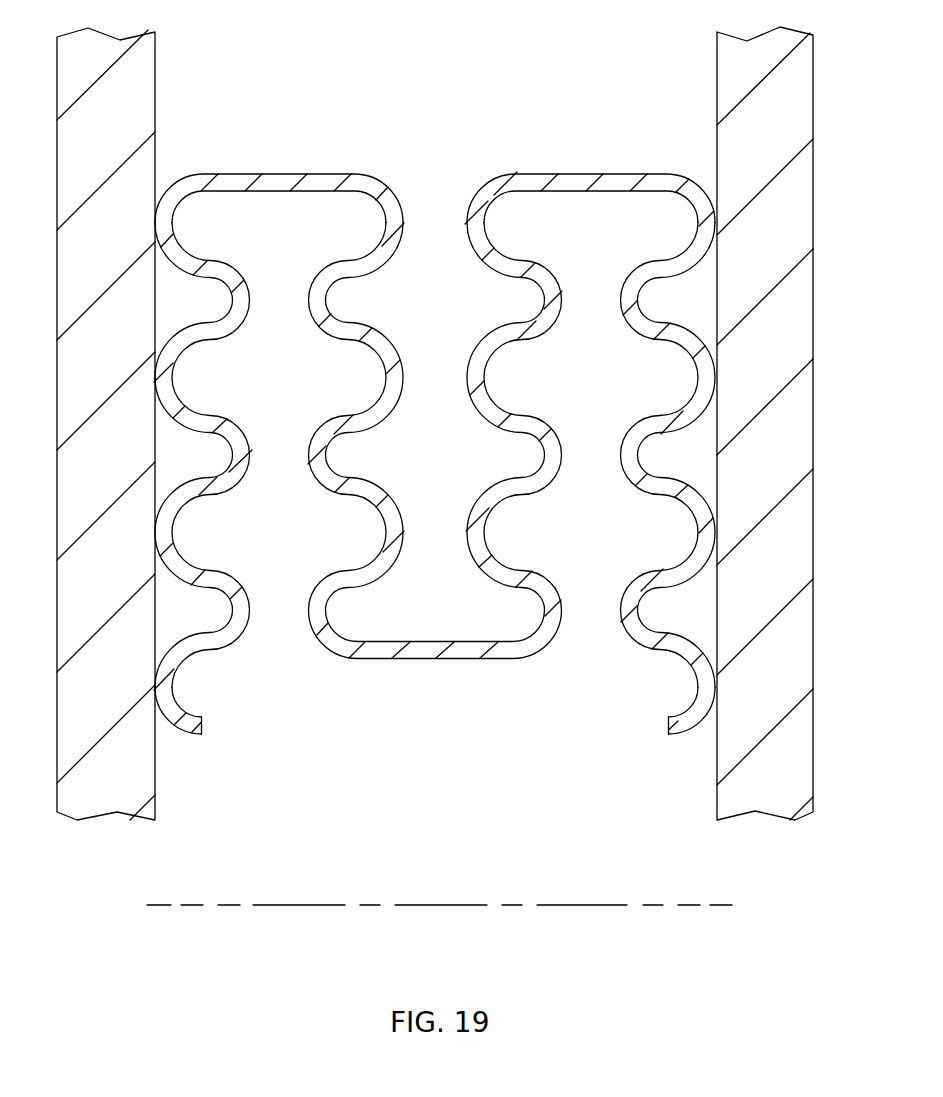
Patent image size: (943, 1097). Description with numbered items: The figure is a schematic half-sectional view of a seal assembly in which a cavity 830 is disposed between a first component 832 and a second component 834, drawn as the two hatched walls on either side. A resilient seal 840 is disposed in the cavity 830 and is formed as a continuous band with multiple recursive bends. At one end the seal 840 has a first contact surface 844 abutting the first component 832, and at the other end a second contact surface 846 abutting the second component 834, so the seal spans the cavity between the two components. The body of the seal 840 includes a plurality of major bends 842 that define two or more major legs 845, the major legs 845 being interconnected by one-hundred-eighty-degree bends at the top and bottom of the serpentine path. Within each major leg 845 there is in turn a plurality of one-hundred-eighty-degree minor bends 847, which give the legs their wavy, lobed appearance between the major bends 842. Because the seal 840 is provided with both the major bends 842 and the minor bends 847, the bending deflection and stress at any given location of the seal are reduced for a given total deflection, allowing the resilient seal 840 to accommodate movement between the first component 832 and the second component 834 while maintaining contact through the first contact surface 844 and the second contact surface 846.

The cavity 830 is at (452, 95).
The first component 832 is at (147, 62).
The second component 834 is at (727, 62).
The resilient seal 840 is at (489, 127).
The major bends 842 is at (262, 175).
The first contact surface 844 is at (155, 687).
The major legs 845 is at (496, 308).
The second contact surface 846 is at (717, 690).
The minor bends 847 is at (477, 533).